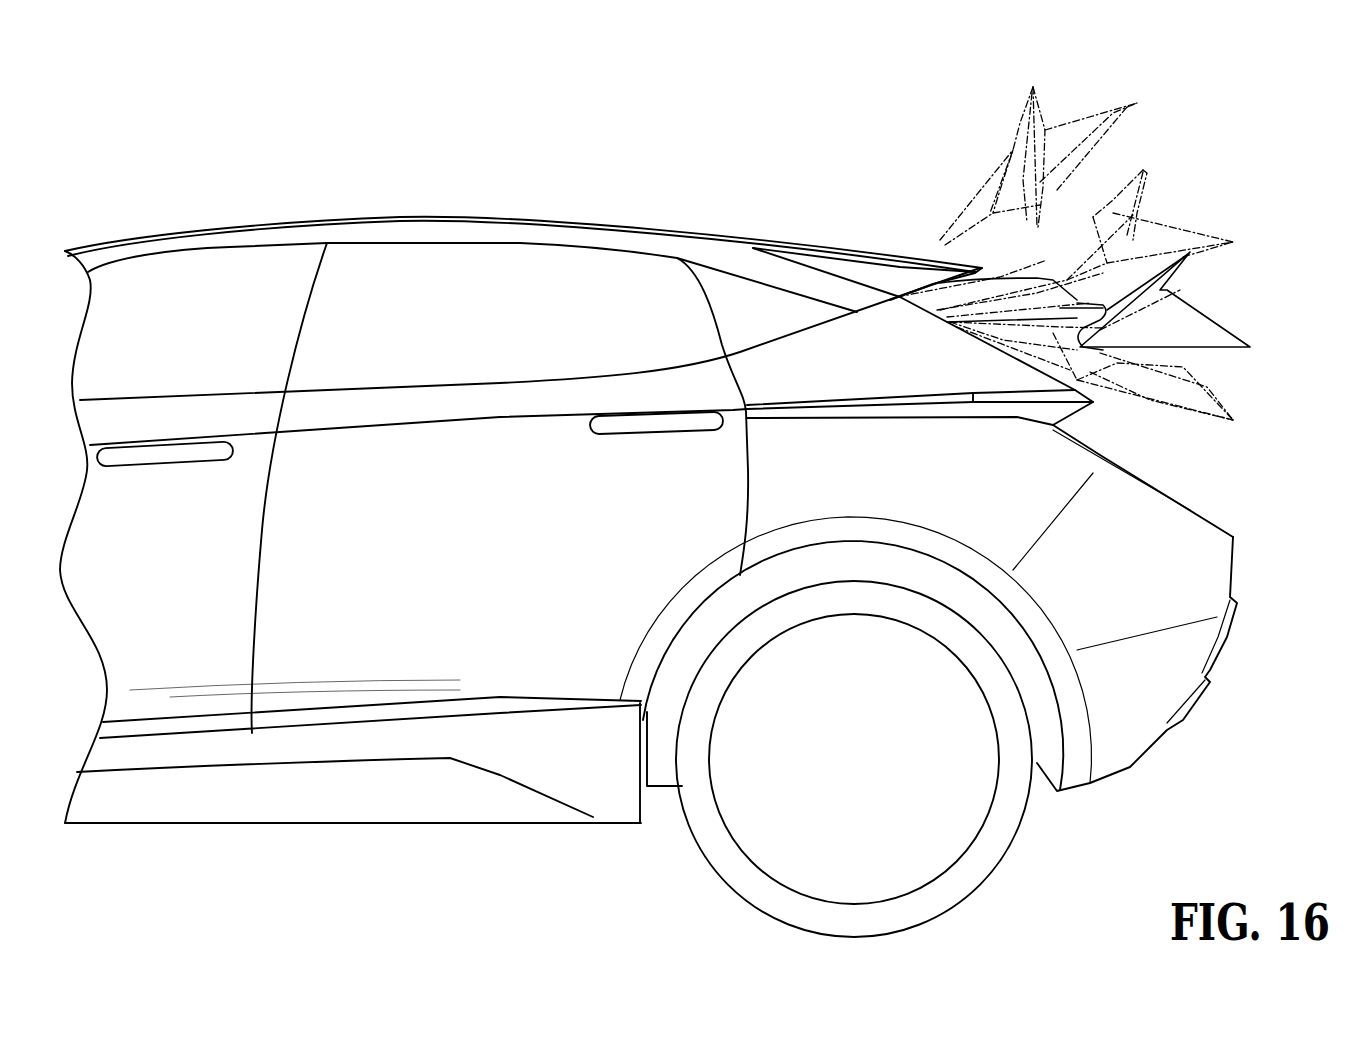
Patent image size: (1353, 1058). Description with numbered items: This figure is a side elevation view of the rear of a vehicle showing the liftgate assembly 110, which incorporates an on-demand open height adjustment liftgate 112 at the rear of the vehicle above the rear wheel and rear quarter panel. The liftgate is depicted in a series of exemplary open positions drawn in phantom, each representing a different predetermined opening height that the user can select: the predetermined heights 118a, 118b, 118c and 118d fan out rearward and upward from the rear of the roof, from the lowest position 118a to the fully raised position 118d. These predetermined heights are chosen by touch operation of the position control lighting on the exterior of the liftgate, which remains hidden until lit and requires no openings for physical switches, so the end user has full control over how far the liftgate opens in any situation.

The liftgate assembly 110 is at (1242, 157).
The on-demand open height adjustment liftgate 112 is at (948, 172).
The predetermined height 118a is at (1200, 390).
The predetermined height 118b is at (1167, 303).
The predetermined height 118c is at (1183, 230).
The predetermined height 118d is at (1140, 107).